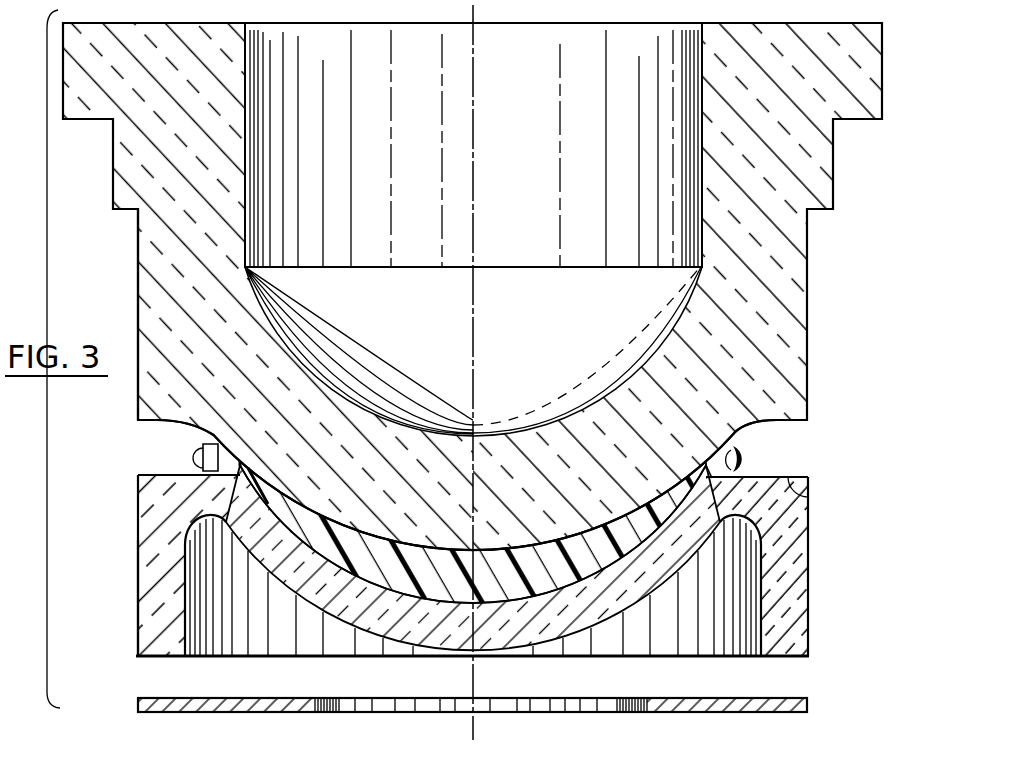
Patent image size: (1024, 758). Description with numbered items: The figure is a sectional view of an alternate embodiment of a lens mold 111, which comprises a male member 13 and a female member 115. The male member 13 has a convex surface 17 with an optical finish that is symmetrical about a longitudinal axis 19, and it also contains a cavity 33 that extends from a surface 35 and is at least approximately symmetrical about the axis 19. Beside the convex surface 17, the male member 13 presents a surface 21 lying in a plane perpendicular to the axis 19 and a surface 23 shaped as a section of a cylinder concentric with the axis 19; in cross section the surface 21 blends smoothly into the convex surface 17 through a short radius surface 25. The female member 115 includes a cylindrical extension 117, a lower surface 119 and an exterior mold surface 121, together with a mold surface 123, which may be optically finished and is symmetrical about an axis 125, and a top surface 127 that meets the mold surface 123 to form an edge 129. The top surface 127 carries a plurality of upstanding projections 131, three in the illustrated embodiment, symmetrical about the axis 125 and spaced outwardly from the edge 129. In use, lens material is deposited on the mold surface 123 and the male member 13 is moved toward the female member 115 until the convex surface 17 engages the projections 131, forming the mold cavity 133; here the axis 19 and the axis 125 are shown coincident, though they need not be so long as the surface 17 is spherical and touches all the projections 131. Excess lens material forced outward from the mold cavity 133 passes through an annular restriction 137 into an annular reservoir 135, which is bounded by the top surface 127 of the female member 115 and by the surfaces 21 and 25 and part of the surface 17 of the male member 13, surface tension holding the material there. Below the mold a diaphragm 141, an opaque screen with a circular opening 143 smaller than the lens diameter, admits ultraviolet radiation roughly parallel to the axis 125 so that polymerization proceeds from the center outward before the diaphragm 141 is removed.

The male member 13 is at (232, 12).
The cavity 33 is at (395, 147).
The surface 35 is at (714, 20).
The longitudinal axis 19 is at (476, 107).
The surface 23 is at (138, 262).
The surface 21 is at (155, 420).
The short radius surface 25 is at (769, 418).
The convex surface 17 is at (357, 533).
The mold cavity 133 is at (497, 567).
The upstanding projections 131 is at (224, 456).
The mold surface 123 is at (541, 596).
The female member 115 is at (138, 600).
The cylindrical extension 117 is at (150, 630).
The lower surface 119 is at (168, 657).
The exterior mold surface 121 is at (647, 587).
The annular reservoir 135 is at (200, 455).
The annular restriction 137 is at (750, 462).
The edge 129 is at (705, 482).
The top surface 127 is at (808, 497).
The lens mold 111 is at (830, 440).
The axis 125 is at (476, 678).
The diaphragm 141 is at (678, 698).
The circular opening 143 is at (322, 699).